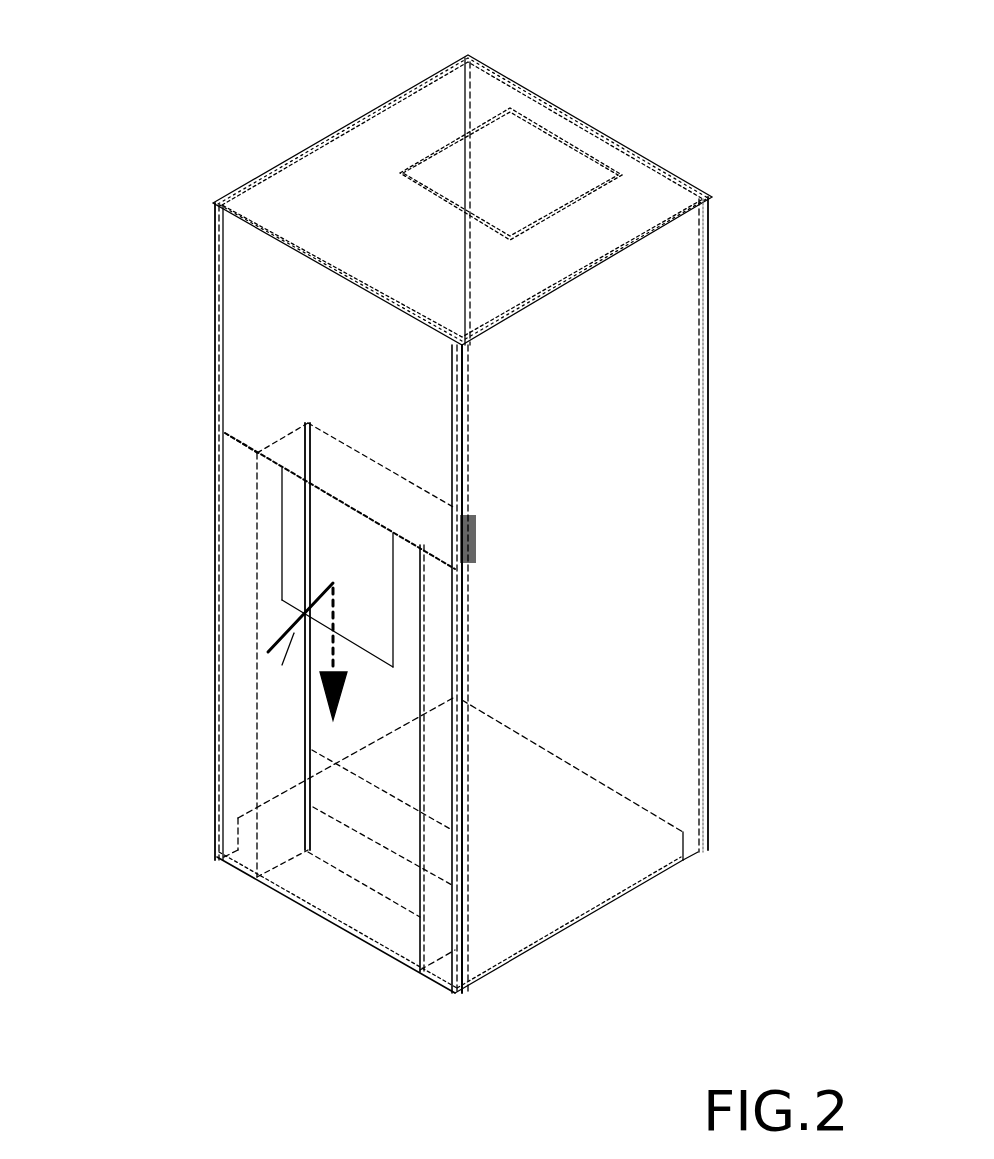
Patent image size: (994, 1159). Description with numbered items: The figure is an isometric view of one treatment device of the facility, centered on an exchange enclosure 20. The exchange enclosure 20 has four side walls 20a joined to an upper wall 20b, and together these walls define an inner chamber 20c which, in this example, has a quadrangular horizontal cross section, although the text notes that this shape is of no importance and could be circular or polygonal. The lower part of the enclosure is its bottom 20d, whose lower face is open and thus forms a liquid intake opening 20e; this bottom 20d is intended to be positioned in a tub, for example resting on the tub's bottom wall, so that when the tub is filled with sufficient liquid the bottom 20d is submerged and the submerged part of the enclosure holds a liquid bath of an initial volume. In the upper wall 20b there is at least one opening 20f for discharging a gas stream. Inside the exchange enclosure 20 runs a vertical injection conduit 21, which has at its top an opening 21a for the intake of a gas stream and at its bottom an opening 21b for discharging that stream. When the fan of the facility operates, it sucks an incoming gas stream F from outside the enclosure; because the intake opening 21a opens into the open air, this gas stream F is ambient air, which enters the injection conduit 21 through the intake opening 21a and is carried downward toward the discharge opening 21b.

The exchange enclosure 20 is at (472, 496).
The side wall 20a is at (218, 252).
The upper wall 20b is at (365, 150).
The inner chamber 20c is at (333, 353).
The bottom 20d is at (740, 763).
The liquid intake opening 20e is at (543, 873).
The opening for discharging a gas stream 20f is at (530, 175).
The vertical injection conduit 21 is at (297, 447).
The intake opening 21a is at (290, 598).
The discharge opening 21b is at (343, 800).
The incoming gas stream F is at (306, 653).